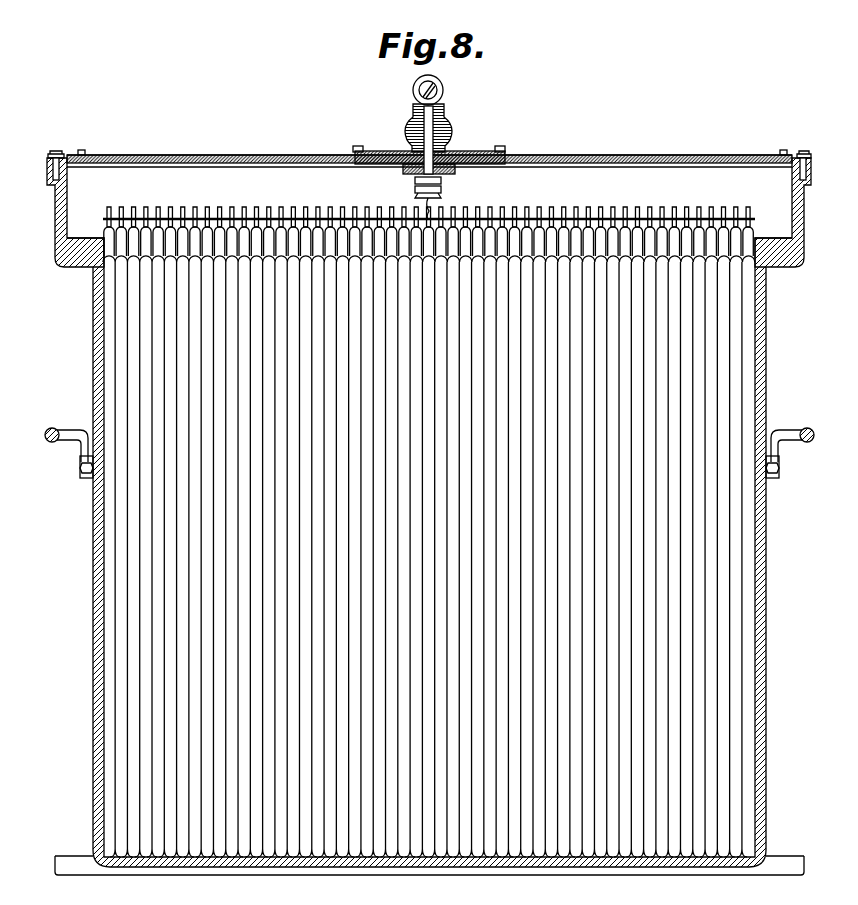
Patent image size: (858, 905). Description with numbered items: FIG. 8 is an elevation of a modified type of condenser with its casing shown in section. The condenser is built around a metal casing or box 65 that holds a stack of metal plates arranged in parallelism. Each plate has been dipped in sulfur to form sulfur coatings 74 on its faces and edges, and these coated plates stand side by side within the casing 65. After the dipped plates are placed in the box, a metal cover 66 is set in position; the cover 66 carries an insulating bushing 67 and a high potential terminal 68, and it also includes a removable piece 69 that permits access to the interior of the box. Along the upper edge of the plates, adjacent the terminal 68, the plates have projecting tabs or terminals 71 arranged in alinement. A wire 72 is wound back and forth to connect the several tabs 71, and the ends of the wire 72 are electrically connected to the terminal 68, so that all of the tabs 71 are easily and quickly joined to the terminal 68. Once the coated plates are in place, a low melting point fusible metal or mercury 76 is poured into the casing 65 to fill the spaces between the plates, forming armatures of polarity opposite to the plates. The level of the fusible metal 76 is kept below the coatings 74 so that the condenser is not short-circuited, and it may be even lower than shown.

The metal casing 65 is at (768, 370).
The metal cover 66 is at (598, 158).
The insulating bushing 67 is at (447, 133).
The high potential terminal 68 is at (443, 101).
The removable piece 69 is at (178, 154).
The projecting tabs 71 is at (215, 216).
The wire 72 is at (445, 205).
The sulfur coatings 74 is at (726, 563).
The fusible metal 76 is at (85, 245).